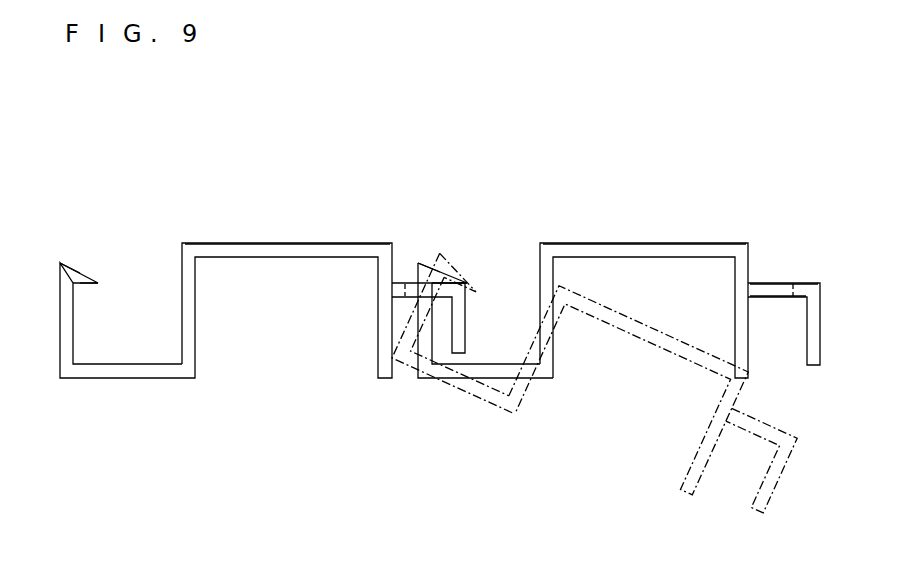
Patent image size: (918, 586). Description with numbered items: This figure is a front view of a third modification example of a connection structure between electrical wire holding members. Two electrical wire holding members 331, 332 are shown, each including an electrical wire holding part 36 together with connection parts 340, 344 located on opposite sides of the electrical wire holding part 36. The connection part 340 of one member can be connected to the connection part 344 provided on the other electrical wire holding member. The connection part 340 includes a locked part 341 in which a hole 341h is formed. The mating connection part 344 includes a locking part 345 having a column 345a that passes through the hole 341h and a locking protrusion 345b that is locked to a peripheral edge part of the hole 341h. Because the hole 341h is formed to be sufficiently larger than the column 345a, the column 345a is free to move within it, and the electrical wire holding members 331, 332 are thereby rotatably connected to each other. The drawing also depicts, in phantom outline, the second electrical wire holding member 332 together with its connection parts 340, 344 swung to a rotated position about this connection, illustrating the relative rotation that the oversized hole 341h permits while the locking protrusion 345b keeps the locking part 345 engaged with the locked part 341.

The electrical wire holding part 36 is at (285, 258).
The electrical wire holding member 331 is at (280, 240).
The electrical wire holding member 332 is at (663, 239).
The connection part 340 is at (402, 276).
The locked part 341 is at (757, 276).
The hole 341h is at (410, 295).
The connection part 344 is at (53, 322).
The locking part 345 is at (162, 213).
The column 345a is at (65, 303).
The locking protrusion 345b is at (71, 280).